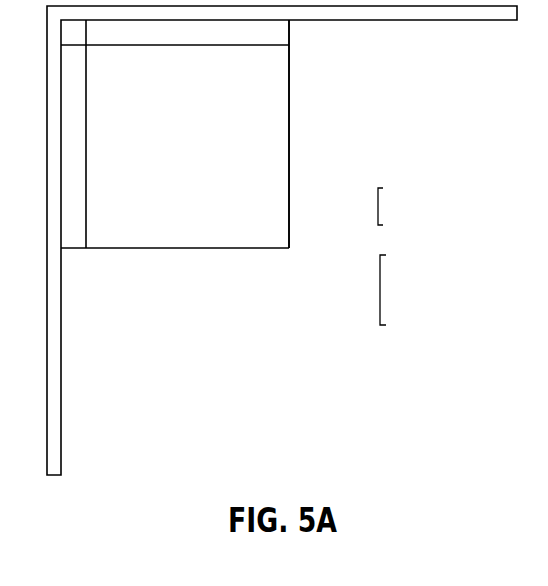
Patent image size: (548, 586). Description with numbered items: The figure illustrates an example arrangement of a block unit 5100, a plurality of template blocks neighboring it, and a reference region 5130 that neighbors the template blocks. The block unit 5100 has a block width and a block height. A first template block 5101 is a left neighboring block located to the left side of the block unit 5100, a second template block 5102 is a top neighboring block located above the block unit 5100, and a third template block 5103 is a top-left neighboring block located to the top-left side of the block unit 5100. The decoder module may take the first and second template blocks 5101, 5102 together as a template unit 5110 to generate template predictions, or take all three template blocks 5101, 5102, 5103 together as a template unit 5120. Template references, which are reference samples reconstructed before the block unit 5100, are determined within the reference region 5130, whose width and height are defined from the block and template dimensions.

The block unit 5100 is at (187, 134).
The first template block 5101 is at (73, 233).
The second template block 5102 is at (278, 32).
The third template block 5103 is at (73, 32).
The template unit 5110 is at (382, 203).
The template unit 5120 is at (382, 286).
The reference region 5130 is at (62, 377).